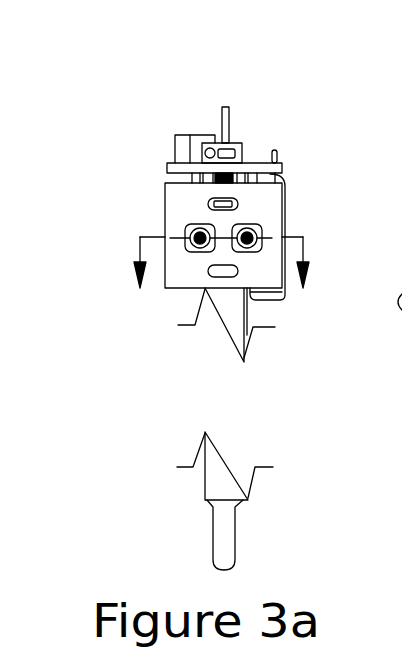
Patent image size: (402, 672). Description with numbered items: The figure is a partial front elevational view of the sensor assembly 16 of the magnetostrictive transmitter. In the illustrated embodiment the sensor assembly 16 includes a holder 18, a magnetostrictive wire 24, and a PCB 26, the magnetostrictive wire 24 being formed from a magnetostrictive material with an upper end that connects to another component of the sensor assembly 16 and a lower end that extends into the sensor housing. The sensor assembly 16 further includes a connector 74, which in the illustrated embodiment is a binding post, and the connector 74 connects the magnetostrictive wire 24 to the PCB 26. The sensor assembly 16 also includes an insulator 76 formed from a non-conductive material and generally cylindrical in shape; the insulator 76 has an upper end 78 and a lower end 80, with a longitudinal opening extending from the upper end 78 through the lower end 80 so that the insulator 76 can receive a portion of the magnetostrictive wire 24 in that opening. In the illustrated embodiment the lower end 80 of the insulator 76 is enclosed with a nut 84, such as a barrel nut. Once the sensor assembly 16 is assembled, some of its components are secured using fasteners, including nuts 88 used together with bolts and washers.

The sensor assembly 16 is at (150, 106).
The nuts 88 is at (264, 15).
The magnetostrictive wire 24 is at (237, 113).
The connector 74 is at (249, 140).
The PCB 26 is at (156, 170).
The holder 18 is at (156, 213).
The upper end 78 is at (255, 300).
The insulator 76 is at (225, 321).
The lower end 80 is at (197, 497).
The nut 84 is at (245, 532).